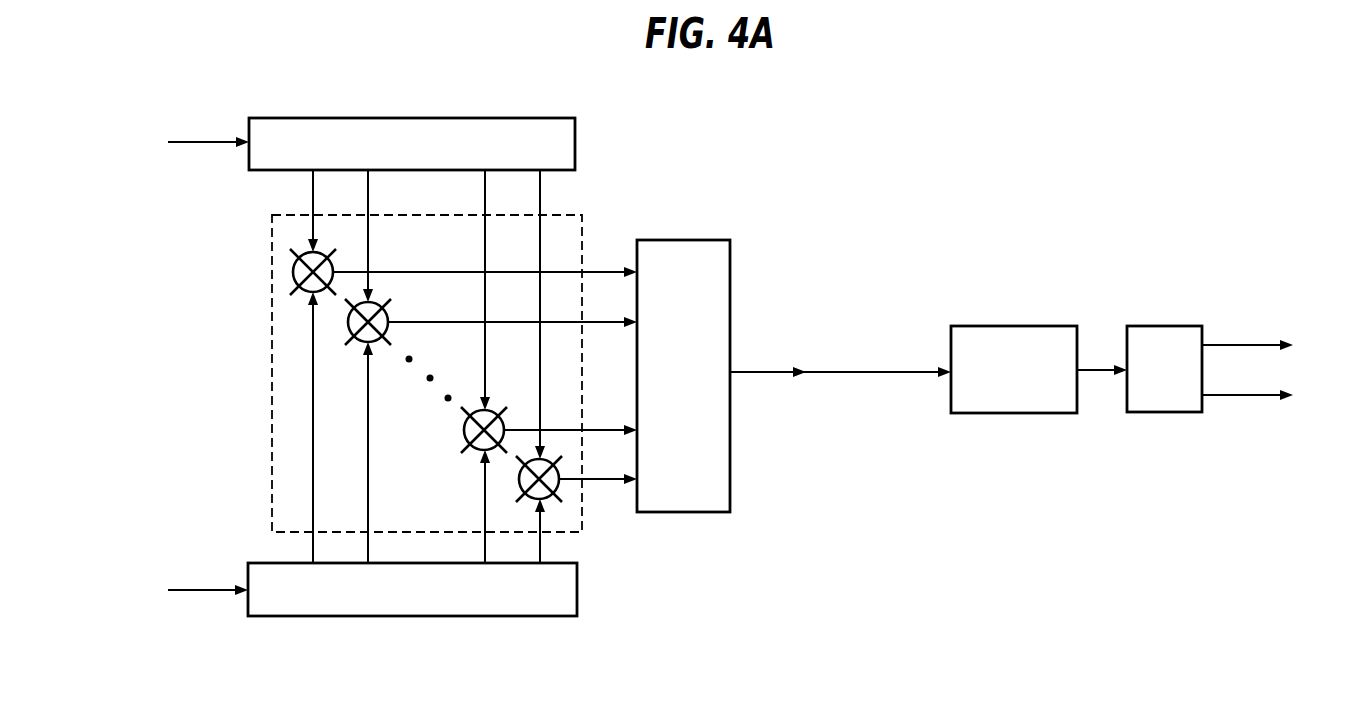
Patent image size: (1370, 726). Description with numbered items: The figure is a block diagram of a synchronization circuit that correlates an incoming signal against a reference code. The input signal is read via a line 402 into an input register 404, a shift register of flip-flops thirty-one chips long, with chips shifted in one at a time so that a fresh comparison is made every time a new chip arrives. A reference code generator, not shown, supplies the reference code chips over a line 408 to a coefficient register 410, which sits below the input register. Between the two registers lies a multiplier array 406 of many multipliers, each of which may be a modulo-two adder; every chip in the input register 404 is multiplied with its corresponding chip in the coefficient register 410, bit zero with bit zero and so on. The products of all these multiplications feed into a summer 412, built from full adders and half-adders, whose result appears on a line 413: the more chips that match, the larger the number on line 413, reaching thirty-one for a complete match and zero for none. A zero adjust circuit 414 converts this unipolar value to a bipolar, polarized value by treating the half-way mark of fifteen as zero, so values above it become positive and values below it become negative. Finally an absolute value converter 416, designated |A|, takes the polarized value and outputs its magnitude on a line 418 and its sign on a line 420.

The line 402 is at (183, 142).
The input register 404 is at (405, 118).
The multiplier array 406 is at (272, 330).
The line 408 is at (210, 590).
The coefficient register 410 is at (405, 617).
The summer 412 is at (680, 240).
The line 413 is at (822, 372).
The zero adjust circuit 414 is at (985, 326).
The absolute value converter 416 is at (1148, 326).
The line 418 is at (1242, 345).
The line 420 is at (1242, 395).